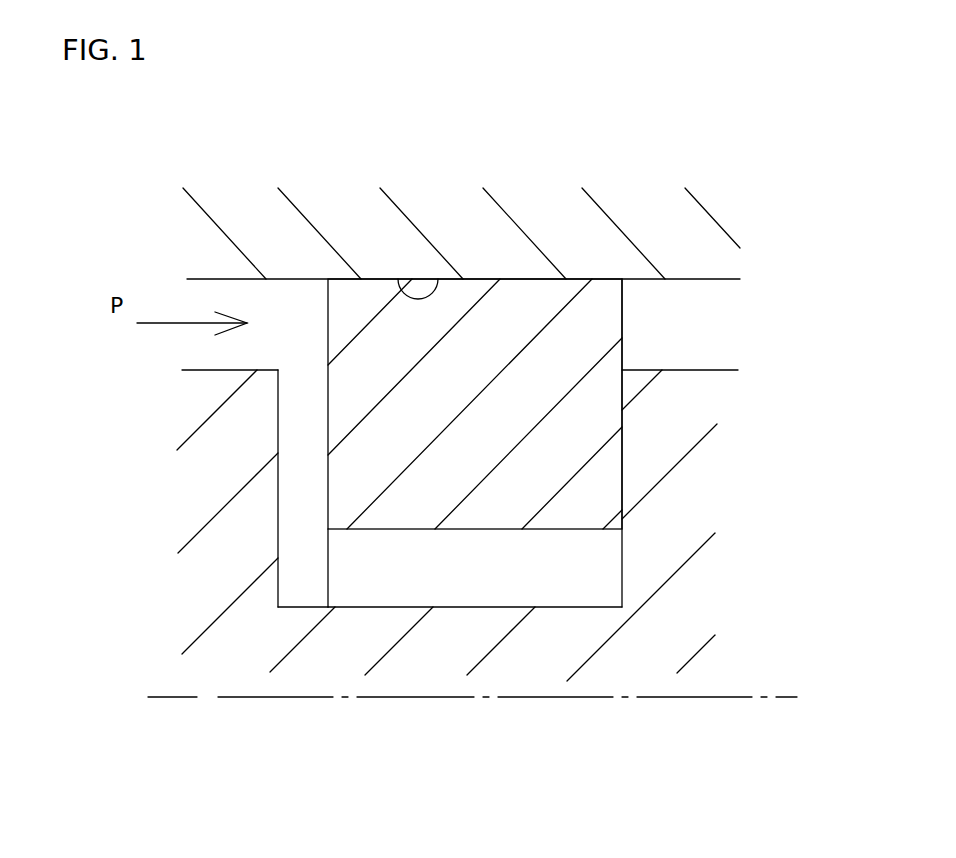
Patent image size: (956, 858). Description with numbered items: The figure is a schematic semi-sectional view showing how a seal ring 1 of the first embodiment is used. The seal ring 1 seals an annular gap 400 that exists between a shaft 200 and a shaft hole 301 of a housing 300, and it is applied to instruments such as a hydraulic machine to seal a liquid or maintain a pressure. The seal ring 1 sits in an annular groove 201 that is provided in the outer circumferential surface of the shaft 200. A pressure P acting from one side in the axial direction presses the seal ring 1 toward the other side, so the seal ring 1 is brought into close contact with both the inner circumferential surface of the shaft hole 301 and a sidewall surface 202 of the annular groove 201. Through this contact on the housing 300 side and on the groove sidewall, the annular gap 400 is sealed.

The seal ring 1 is at (485, 358).
The shaft 200 is at (647, 645).
The annular groove 201 is at (305, 575).
The sidewall surface 202 is at (622, 448).
The housing 300 is at (677, 222).
The shaft hole 301 is at (403, 279).
The annular gap 400 is at (782, 332).